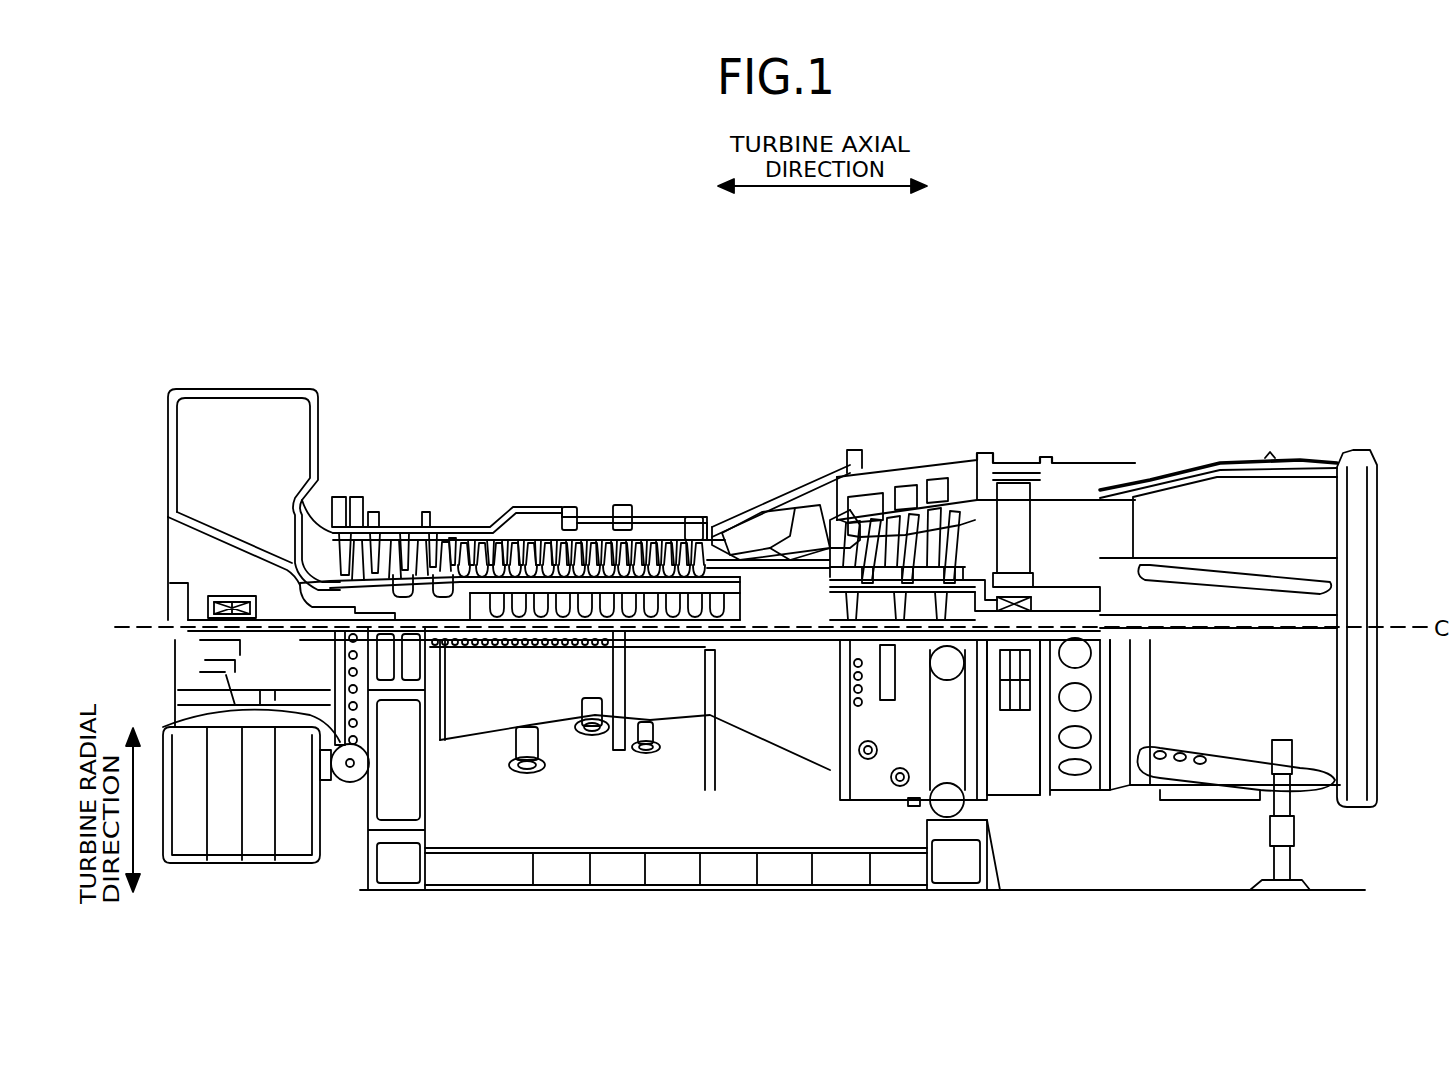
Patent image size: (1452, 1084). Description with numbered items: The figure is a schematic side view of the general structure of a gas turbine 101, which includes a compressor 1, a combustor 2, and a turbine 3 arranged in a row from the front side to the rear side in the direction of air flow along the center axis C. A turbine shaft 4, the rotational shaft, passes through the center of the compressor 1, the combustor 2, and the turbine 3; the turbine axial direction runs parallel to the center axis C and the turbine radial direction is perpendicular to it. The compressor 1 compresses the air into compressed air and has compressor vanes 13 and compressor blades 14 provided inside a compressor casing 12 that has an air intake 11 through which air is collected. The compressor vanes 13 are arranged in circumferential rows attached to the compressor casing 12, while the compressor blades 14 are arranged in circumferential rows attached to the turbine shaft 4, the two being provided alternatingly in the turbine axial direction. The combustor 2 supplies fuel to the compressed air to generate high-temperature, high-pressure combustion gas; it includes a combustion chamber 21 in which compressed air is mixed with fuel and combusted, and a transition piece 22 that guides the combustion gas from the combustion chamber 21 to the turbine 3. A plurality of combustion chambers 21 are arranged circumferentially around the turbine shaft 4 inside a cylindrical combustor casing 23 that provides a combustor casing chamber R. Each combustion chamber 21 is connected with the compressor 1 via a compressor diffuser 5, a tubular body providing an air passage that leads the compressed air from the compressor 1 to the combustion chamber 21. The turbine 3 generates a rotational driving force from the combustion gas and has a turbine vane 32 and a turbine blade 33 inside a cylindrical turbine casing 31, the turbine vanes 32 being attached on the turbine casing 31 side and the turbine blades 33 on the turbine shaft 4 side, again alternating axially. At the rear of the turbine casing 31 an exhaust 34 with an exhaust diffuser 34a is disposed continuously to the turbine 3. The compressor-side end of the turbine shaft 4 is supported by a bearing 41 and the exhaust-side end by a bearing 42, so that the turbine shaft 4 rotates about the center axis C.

The compressor 1 is at (403, 480).
The combustor 2 is at (705, 470).
The turbine 3 is at (986, 452).
The turbine shaft 4 is at (785, 600).
The compressor diffuser 5 is at (716, 501).
The air intake 11 is at (183, 456).
The compressor casing 12 is at (595, 520).
The compressor vanes 13 is at (404, 540).
The compressor blades 14 is at (462, 540).
The combustion chamber 21 is at (748, 542).
The transition piece 22 is at (810, 525).
The combustor casing 23 is at (735, 500).
The combustor casing chamber R is at (790, 500).
The turbine casing 31 is at (923, 490).
The turbine vane 32 is at (828, 530).
The turbine blade 33 is at (865, 530).
The exhaust 34 is at (1219, 467).
The exhaust diffuser 34a is at (1107, 490).
The bearing 41 is at (200, 607).
The bearing 42 is at (1130, 571).
The gas turbine 101 is at (965, 389).